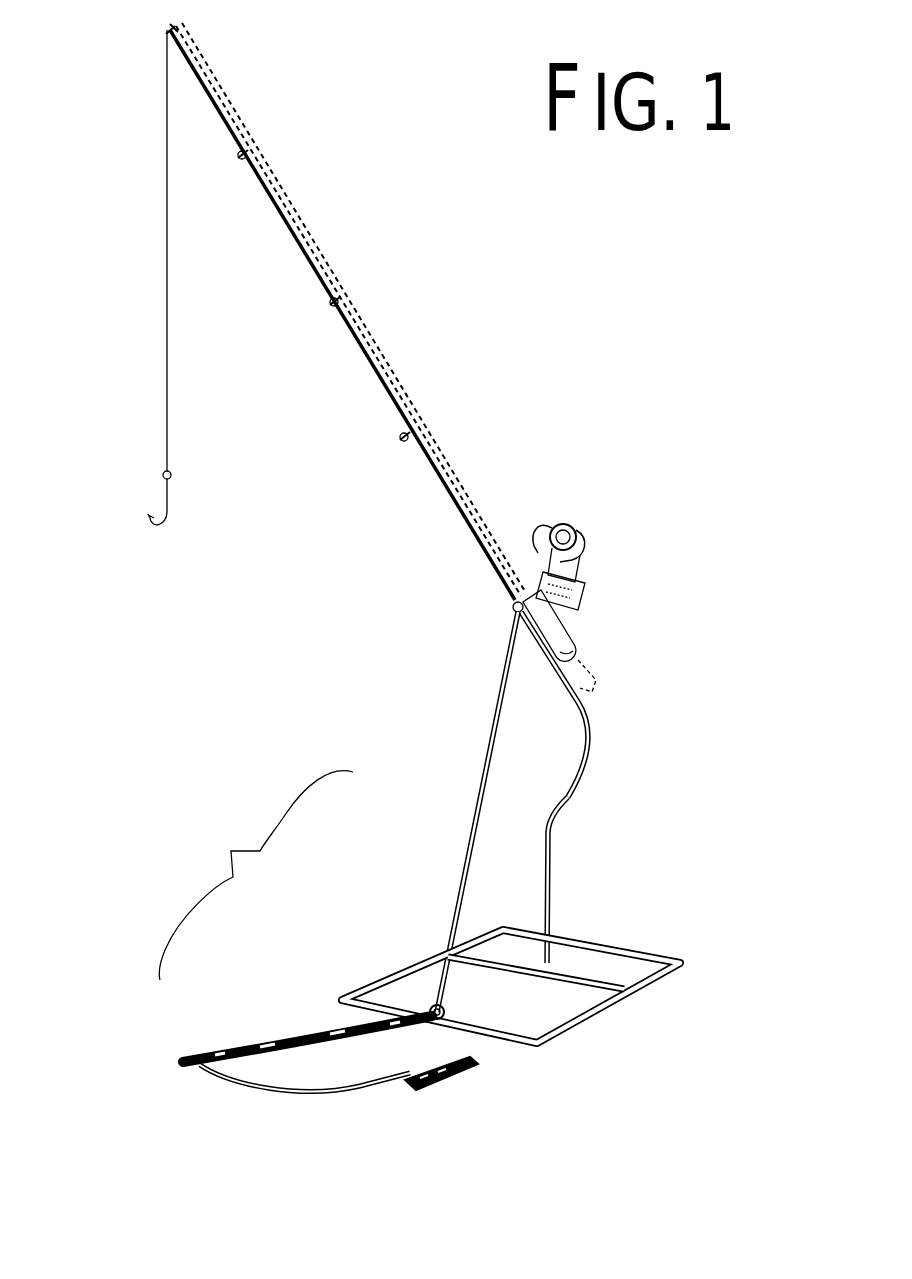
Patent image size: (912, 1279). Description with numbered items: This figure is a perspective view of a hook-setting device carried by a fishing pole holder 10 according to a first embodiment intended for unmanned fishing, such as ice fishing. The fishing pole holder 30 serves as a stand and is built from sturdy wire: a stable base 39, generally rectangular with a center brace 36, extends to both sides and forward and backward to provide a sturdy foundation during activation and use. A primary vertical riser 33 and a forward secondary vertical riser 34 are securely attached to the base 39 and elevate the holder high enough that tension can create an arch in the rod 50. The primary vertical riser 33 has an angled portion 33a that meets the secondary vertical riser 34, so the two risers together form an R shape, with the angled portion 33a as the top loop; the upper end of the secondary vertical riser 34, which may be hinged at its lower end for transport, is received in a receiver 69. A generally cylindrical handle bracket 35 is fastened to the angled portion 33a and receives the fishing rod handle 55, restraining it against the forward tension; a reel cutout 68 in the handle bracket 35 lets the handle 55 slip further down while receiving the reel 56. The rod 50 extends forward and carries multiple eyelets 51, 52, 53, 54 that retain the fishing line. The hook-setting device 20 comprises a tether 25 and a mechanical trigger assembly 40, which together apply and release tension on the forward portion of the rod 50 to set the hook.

The hook-setting device carried by a fishing pole holder 10 is at (216, 826).
The hook-setting device 20 is at (243, 1027).
The tether 25 is at (298, 1035).
The fishing pole holder 30 is at (430, 821).
The primary vertical riser 33 is at (553, 870).
The angled portion 33a is at (575, 690).
The secondary vertical riser 34 is at (488, 778).
The handle bracket 35 is at (573, 641).
The center brace 36 is at (620, 977).
The base 39 is at (590, 1020).
The mechanical trigger assembly 40 is at (465, 1093).
The rod 50 is at (472, 490).
The eyelet 51 is at (165, 32).
The eyelet 52 is at (238, 162).
The eyelet 53 is at (330, 306).
The eyelet 54 is at (400, 443).
The fishing rod handle 55 is at (593, 684).
The reel 56 is at (590, 535).
The reel cutout 68 is at (560, 610).
The receiver 69 is at (511, 607).